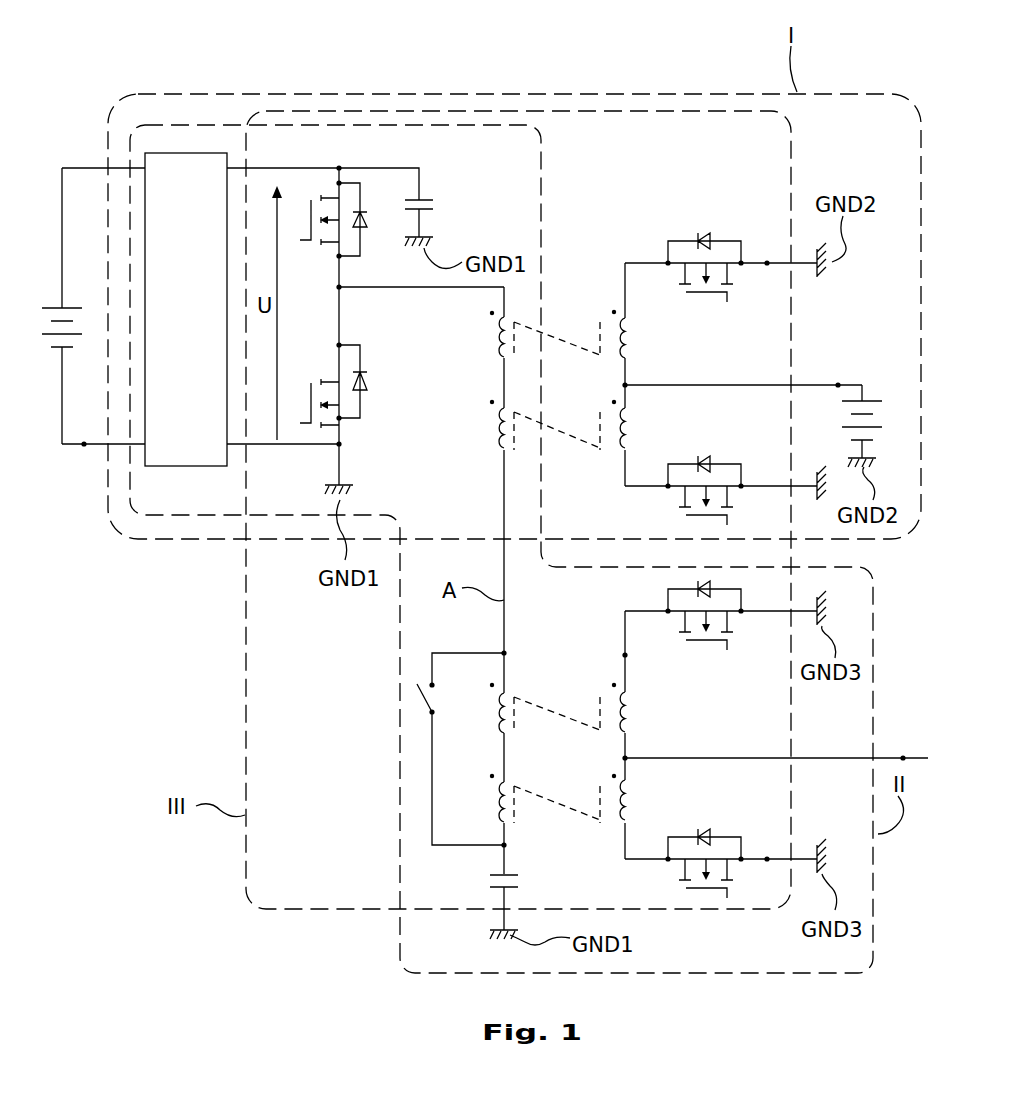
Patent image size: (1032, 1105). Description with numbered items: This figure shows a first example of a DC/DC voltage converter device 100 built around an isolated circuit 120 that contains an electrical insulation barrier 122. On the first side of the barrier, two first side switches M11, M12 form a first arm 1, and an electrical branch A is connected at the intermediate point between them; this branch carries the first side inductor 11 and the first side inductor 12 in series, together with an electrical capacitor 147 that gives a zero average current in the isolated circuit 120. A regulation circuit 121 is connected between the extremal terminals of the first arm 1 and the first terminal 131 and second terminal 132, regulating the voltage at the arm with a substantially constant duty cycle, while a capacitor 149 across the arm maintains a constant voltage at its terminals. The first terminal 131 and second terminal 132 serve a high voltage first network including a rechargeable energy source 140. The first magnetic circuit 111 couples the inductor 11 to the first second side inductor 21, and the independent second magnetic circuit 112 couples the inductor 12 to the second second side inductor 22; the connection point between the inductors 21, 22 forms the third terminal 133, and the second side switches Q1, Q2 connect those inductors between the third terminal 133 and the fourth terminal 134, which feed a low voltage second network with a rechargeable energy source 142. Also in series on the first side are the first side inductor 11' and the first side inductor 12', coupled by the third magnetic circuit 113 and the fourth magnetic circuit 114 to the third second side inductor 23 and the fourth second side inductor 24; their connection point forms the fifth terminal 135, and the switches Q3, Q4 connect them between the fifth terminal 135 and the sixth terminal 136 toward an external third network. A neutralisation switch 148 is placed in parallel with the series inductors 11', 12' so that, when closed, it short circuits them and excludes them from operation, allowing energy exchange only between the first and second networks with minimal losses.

The DC/DC voltage converter device 100 is at (845, 88).
The isolated circuit 120 is at (794, 150).
The regulation circuit 121 is at (186, 309).
The electrical insulation barrier 122 is at (577, 285).
The first terminal 131 is at (79, 168).
The second terminal 132 is at (84, 448).
The third terminal 133 is at (838, 383).
The fourth terminal 134 is at (767, 261).
The fifth terminal 135 is at (903, 756).
The sixth terminal 136 is at (767, 857).
The rechargeable energy source 140 is at (55, 306).
The rechargeable energy source 142 is at (886, 404).
The electrical capacitor 147 is at (488, 884).
The neutralisation switch 148 is at (422, 701).
The capacitor 149 is at (438, 206).
The first magnetic circuit 111 is at (590, 350).
The second magnetic circuit 112 is at (590, 445).
The third magnetic circuit 113 is at (522, 702).
The fourth magnetic circuit 114 is at (548, 805).
The first side inductor 11 is at (468, 344).
The first side inductor 12 is at (469, 429).
The first side inductor 11' is at (474, 701).
The first side inductor 12' is at (472, 787).
The first second side inductor 21 is at (628, 325).
The second second side inductor 22 is at (627, 440).
The third second side inductor 23 is at (628, 715).
The fourth second side inductor 24 is at (627, 802).
The first arm 1 is at (341, 275).
The first side switch M11 is at (328, 242).
The first side switch M12 is at (332, 383).
The second side switch Q1 is at (733, 272).
The second side switch Q2 is at (726, 472).
The switch Q3 is at (730, 618).
The switch Q4 is at (735, 875).